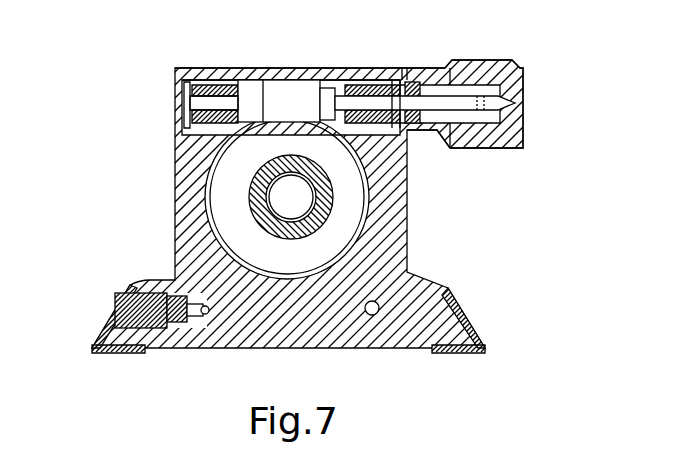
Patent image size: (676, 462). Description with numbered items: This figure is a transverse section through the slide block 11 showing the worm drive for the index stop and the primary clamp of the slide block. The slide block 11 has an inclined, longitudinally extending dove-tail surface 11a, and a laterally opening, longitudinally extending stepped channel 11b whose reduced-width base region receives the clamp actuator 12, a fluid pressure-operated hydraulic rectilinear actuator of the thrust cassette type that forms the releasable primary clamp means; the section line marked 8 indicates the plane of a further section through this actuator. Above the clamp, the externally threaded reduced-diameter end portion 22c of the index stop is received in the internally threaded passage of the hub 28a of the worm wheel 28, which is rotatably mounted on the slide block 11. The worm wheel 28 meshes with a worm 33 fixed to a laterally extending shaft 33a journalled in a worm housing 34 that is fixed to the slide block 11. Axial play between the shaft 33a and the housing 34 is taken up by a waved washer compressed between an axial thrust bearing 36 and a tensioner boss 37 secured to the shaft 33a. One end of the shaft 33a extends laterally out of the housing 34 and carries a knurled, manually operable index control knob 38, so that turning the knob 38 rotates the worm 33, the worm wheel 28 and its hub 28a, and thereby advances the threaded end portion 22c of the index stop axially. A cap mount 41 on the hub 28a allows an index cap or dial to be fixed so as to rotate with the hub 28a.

The section line 8 is at (108, 310).
The slide block 11 is at (323, 51).
The dove-tail surface 11a is at (92, 345).
The stepped channel 11b is at (177, 296).
The clamp actuator 12 is at (177, 328).
The reduced-diameter end portion 22c is at (307, 206).
The worm wheel 28 is at (302, 146).
The hub 28a is at (253, 195).
The worm 33 is at (307, 93).
The shaft 33a is at (355, 96).
The worm housing 34 is at (254, 68).
The axial thrust bearing 36 is at (368, 127).
The tensioner boss 37 is at (405, 128).
The index control knob 38 is at (525, 71).
The cap mount 41 is at (392, 68).